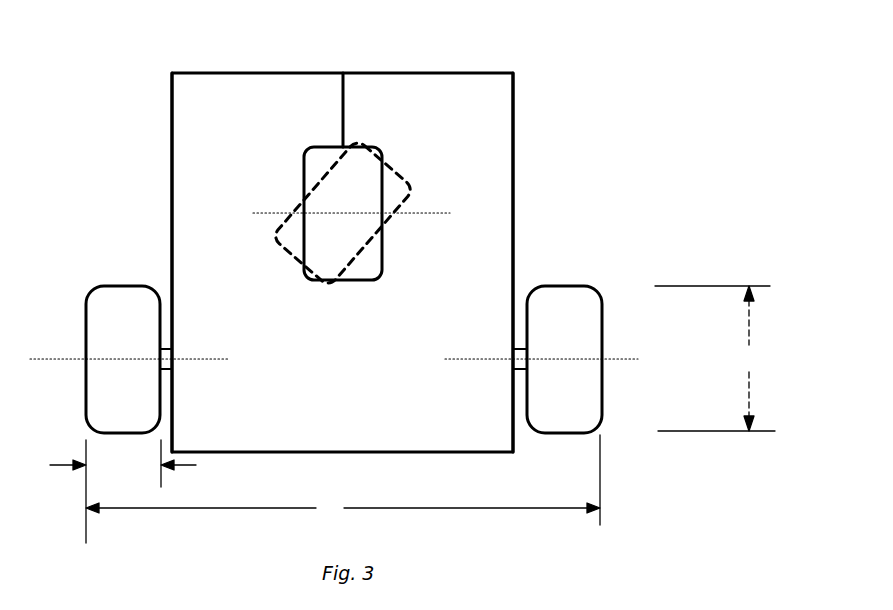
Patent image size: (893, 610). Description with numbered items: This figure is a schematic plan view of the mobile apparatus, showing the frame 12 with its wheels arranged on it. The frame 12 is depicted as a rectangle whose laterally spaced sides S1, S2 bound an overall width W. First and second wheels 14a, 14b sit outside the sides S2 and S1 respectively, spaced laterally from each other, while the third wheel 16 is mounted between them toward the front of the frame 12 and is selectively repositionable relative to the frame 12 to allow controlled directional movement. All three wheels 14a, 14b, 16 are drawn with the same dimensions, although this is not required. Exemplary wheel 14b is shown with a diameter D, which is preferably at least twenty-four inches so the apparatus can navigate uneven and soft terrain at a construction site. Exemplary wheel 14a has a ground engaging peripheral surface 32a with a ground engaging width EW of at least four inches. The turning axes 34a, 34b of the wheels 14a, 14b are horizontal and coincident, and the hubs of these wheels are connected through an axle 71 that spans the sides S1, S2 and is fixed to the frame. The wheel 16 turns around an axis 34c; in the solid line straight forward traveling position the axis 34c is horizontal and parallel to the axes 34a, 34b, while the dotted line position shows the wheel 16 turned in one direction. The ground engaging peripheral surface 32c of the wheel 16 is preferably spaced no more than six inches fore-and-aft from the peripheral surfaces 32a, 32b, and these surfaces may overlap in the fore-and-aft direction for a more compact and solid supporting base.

The frame 12 is at (527, 172).
The third wheel 16 is at (362, 211).
The first wheel 14a is at (100, 326).
The second wheel 14b is at (595, 326).
The ground engaging peripheral surface 32a is at (120, 285).
The ground engaging peripheral surface 32b is at (556, 286).
The ground engaging peripheral surface 32c is at (352, 282).
The turning axis 34a is at (120, 358).
The turning axis 34b is at (557, 358).
The axis 34c is at (430, 215).
The axle 71 is at (521, 371).
The side S1 is at (527, 100).
The side S2 is at (158, 112).
The ground engaging width EW is at (123, 491).
The overall width W is at (343, 480).
The diameter D is at (715, 358).